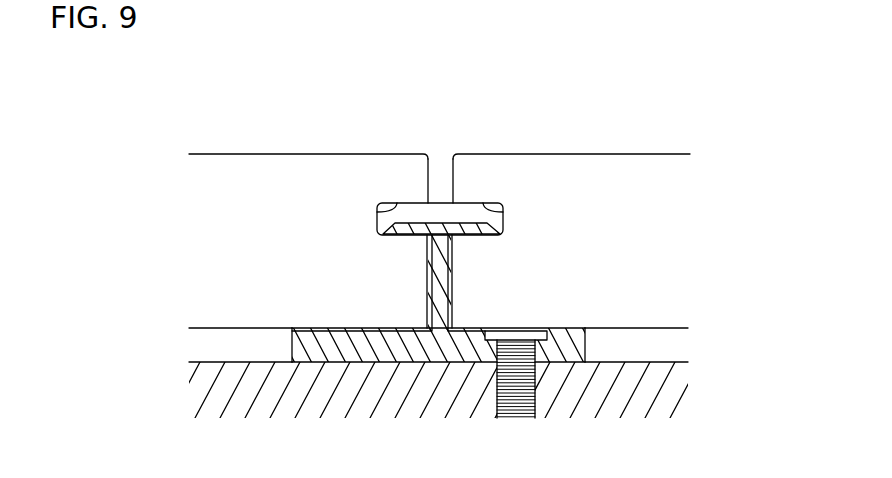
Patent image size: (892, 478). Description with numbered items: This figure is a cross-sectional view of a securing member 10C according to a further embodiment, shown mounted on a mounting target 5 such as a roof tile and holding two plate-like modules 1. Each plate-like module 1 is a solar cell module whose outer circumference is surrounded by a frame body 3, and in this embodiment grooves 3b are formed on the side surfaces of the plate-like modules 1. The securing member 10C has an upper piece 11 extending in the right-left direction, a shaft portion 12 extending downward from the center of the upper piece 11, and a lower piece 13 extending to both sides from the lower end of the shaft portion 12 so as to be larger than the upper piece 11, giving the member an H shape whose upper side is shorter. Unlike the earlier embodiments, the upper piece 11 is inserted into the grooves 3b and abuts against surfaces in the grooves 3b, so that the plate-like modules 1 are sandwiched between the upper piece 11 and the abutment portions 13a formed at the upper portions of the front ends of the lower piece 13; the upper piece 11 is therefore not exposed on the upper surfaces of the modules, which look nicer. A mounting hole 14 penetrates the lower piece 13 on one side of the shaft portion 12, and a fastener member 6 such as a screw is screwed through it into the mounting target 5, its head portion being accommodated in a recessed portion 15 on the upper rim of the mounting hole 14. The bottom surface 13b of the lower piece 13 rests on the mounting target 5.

The plate-like module 1 is at (243, 152).
The frame body 3 is at (279, 181).
The grooves 3b is at (377, 209).
The securing member 10C is at (461, 215).
The upper piece 11 is at (418, 227).
The shaft portion 12 is at (438, 280).
The lower piece 13 is at (360, 350).
The abutment portions 13a is at (292, 328).
The bottom surface 13b is at (382, 384).
The recessed portion 15 is at (463, 329).
The fastener member 6 is at (518, 347).
The mounting hole 14 is at (534, 350).
The mounting target 5 is at (670, 362).